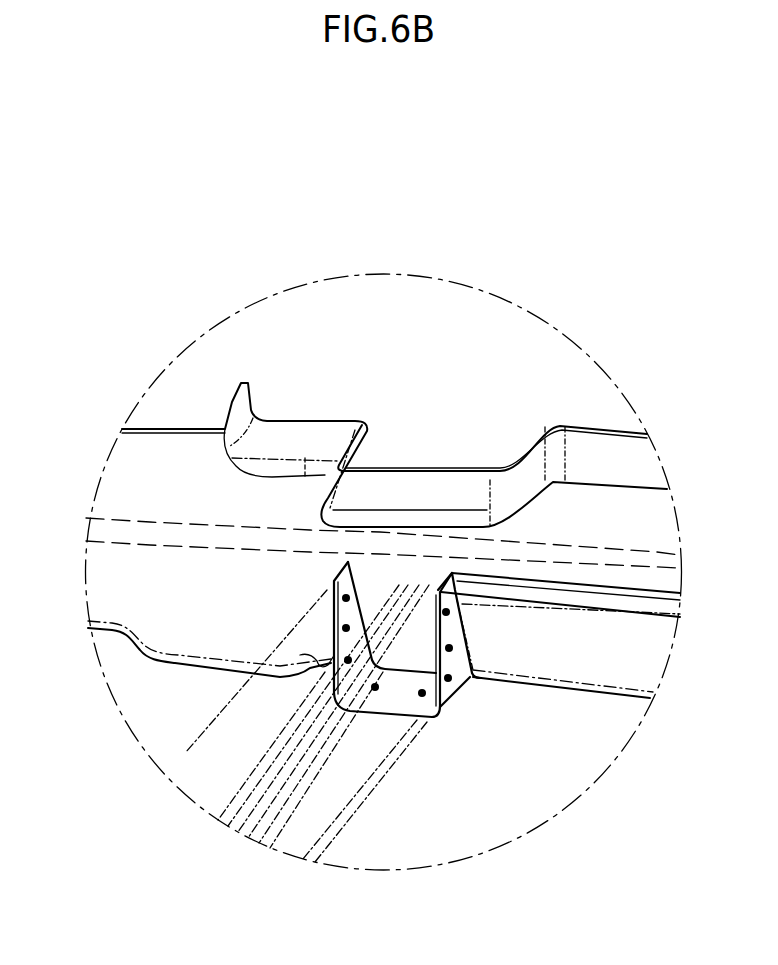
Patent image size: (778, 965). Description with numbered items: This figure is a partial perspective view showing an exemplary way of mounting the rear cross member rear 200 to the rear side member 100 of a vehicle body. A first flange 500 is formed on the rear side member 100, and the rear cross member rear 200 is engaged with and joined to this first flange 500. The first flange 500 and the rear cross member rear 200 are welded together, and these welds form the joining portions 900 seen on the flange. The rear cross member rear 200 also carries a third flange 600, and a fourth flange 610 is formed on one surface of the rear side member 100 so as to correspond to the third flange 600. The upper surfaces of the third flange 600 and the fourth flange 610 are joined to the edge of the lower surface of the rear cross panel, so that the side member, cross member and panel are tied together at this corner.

The rear side member 100 is at (598, 500).
The rear cross member rear 200 is at (220, 744).
The first flange 500 is at (452, 665).
The third flange 600 is at (307, 757).
The fourth flange 610 is at (620, 603).
The joining portions 900 is at (467, 643).